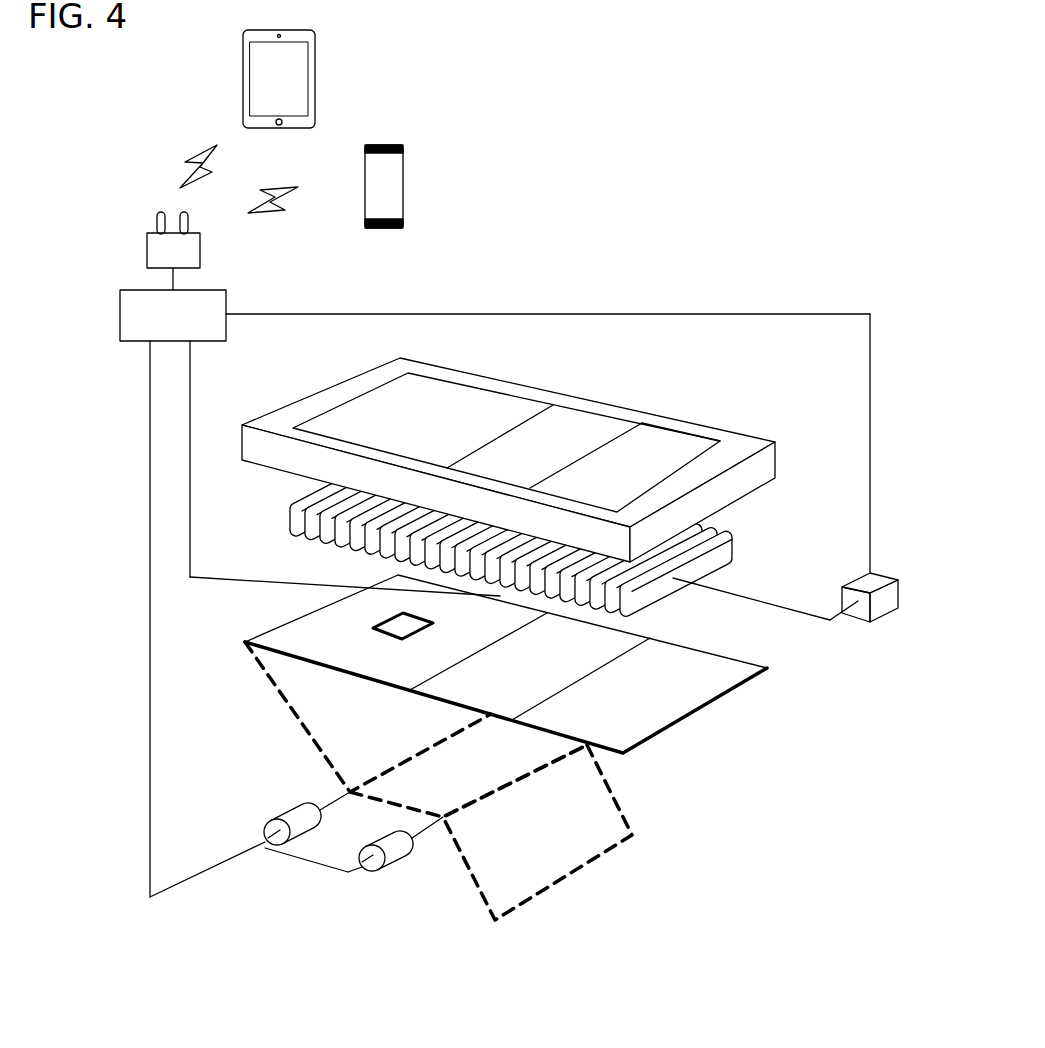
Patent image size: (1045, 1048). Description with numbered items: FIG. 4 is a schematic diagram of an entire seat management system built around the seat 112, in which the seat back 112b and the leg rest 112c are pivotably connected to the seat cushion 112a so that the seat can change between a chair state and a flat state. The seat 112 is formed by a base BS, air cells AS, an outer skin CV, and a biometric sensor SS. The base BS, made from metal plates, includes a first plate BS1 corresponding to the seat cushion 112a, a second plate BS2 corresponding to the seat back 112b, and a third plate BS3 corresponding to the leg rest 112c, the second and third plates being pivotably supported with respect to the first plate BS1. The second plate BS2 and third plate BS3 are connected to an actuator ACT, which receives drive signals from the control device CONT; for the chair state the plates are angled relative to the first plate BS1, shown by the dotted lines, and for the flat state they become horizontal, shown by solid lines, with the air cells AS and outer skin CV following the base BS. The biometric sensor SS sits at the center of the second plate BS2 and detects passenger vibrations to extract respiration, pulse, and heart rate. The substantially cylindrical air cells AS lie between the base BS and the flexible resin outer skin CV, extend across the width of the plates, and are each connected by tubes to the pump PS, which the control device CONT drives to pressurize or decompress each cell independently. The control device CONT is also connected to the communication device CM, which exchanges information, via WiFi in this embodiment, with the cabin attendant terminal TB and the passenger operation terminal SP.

The cabin attendant terminal TB is at (318, 52).
The passenger operation terminal SP is at (405, 165).
The communication device CM is at (147, 233).
The control device CONT is at (227, 300).
The outer skin CV is at (305, 395).
The seat 112 is at (522, 621).
The seat cushion 112a is at (663, 404).
The seat back 112b is at (566, 383).
The leg rest 112c is at (712, 406).
The air cells AS is at (323, 542).
The biometric sensor SS is at (373, 628).
The base BS is at (520, 747).
The first plate BS1 is at (555, 680).
The second plate BS2 is at (427, 675).
The third plate BS3 is at (672, 711).
The actuator ACT is at (380, 837).
The pump PS is at (880, 618).